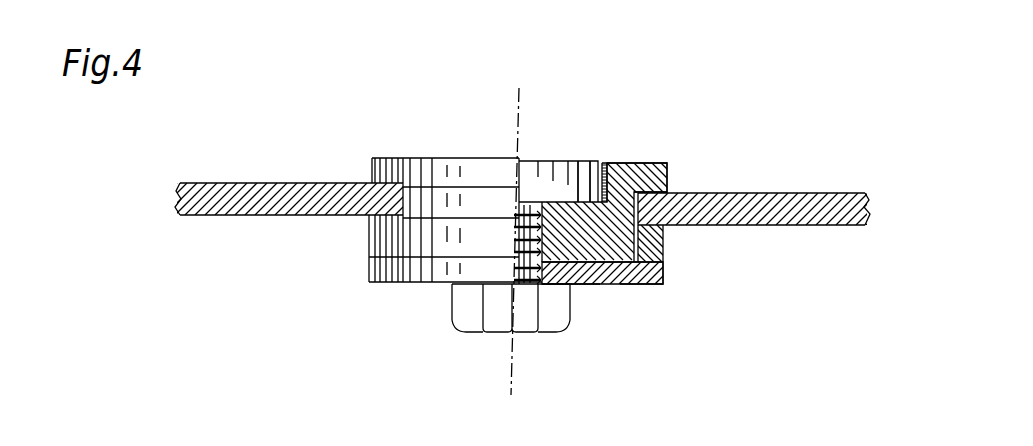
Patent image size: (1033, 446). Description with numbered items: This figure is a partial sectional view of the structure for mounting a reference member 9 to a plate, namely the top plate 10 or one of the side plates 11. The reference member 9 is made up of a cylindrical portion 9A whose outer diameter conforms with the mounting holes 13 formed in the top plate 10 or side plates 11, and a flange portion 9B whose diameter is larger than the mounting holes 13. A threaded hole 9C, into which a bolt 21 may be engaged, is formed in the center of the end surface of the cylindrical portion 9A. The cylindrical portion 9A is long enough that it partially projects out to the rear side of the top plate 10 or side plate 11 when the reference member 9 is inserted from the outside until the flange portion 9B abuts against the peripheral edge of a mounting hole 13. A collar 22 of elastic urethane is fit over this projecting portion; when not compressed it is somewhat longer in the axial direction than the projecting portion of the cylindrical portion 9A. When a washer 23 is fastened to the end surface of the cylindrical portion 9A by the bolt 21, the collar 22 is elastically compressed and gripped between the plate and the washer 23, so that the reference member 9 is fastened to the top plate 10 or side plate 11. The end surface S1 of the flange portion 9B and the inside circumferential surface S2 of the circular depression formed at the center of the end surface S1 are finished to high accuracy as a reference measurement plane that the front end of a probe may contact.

The reference member 9 is at (652, 157).
The cylindrical portion 9A is at (623, 284).
The flange portion 9B is at (670, 177).
The threaded hole 9C is at (593, 284).
The top plate 10 is at (752, 187).
The side plates 11 is at (770, 195).
The mounting holes 13 is at (417, 158).
The bolt 21 is at (463, 311).
The collar 22 is at (665, 243).
The washer 23 is at (665, 278).
The end surface S1 is at (629, 162).
The inside circumferential surface S2 is at (583, 161).